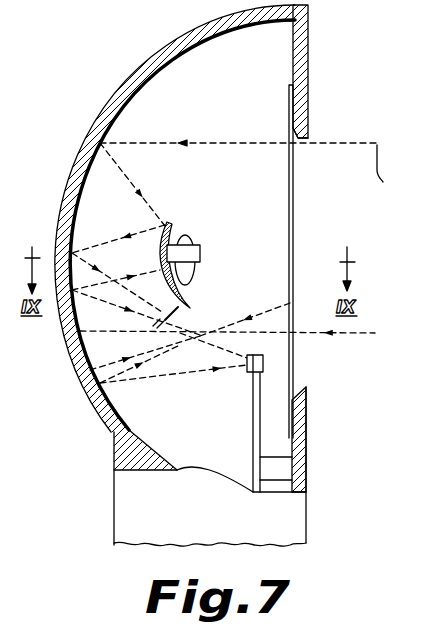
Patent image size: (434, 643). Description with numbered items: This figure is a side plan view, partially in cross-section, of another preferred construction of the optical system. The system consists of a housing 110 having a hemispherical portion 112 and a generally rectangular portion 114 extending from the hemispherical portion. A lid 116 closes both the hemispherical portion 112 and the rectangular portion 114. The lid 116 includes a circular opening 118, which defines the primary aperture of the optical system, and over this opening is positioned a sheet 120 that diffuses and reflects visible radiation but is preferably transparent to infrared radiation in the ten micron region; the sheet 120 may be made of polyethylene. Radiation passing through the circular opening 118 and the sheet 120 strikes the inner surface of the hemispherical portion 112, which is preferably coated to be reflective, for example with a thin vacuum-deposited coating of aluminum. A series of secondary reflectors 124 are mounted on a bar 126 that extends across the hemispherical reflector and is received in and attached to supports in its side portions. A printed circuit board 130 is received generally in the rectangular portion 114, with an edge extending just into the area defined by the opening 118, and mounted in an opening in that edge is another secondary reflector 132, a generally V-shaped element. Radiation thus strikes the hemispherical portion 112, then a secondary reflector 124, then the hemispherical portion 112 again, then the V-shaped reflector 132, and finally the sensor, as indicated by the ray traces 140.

The housing 110 is at (290, 512).
The hemispherical portion 112 is at (183, 58).
The rectangular portion 114 is at (127, 533).
The lid 116 is at (308, 63).
The circular opening 118 is at (299, 142).
The sheet 120 is at (295, 198).
The secondary reflectors 124 is at (170, 222).
The bar 126 is at (200, 250).
The printed circuit board 130 is at (255, 457).
The secondary reflector 132 is at (272, 367).
The ray traces 140 is at (260, 173).